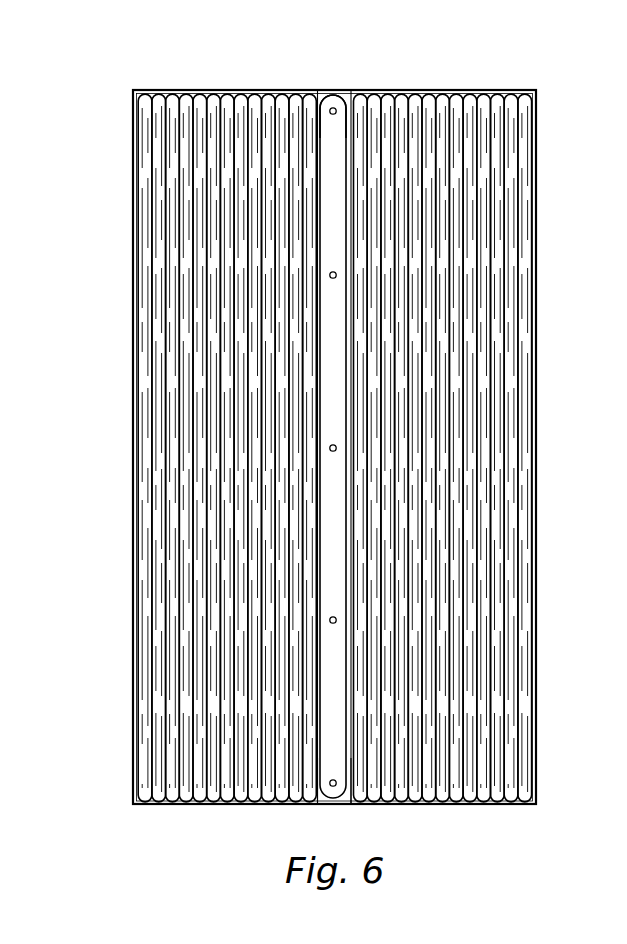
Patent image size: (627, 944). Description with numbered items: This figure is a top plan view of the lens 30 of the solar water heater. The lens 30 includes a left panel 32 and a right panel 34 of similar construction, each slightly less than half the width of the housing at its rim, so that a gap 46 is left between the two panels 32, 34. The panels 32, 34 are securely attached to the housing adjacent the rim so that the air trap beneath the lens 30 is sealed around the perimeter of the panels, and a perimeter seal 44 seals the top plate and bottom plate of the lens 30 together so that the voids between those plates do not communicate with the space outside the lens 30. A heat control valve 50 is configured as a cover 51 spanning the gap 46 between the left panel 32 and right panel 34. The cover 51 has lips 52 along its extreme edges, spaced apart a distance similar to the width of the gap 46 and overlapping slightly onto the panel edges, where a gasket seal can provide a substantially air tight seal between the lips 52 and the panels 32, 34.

The lens 30 is at (538, 66).
The left panel 32 is at (190, 118).
The right panel 34 is at (455, 112).
The perimeter seal 44 is at (125, 182).
The gap 46 is at (319, 62).
The heat control valve 50 is at (339, 63).
The cover 51 is at (320, 131).
The lips 52 is at (308, 758).